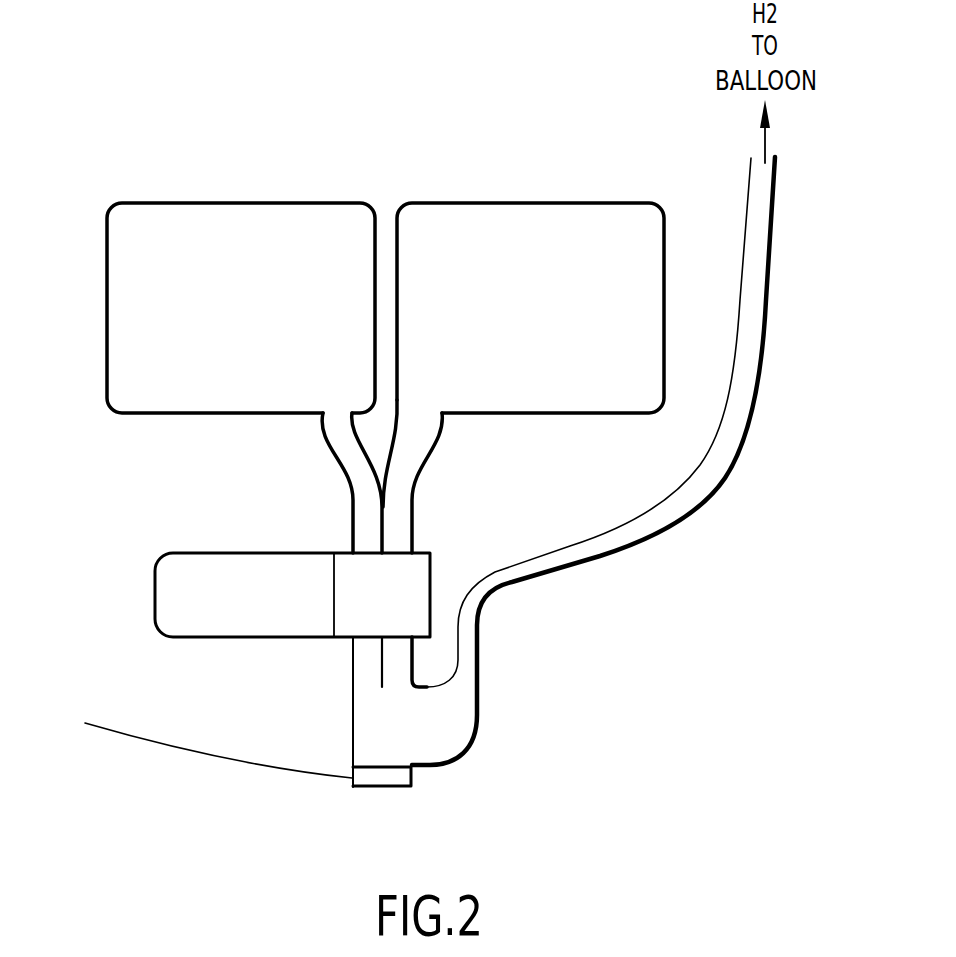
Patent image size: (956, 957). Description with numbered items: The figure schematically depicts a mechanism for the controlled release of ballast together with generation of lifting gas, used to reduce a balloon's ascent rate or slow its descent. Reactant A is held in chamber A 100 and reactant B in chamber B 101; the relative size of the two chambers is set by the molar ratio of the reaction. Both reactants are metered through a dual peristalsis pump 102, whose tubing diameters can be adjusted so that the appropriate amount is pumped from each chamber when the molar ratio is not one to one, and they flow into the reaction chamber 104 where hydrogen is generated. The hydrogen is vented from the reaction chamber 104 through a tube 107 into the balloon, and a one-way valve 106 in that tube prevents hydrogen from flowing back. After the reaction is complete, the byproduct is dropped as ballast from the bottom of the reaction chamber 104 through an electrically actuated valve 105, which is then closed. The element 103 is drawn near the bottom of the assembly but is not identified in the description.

The chamber A 100 is at (198, 240).
The chamber B 101 is at (518, 237).
The dual peristalsis pump 102 is at (222, 570).
The balloon envelope 103 is at (200, 758).
The reaction chamber 104 is at (377, 733).
The electrically actuated valve 105 is at (378, 773).
The one-way valve 106 is at (470, 640).
The tube 107 is at (600, 548).